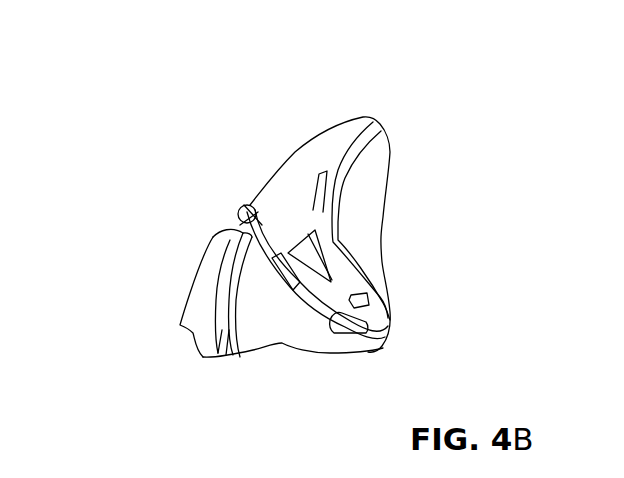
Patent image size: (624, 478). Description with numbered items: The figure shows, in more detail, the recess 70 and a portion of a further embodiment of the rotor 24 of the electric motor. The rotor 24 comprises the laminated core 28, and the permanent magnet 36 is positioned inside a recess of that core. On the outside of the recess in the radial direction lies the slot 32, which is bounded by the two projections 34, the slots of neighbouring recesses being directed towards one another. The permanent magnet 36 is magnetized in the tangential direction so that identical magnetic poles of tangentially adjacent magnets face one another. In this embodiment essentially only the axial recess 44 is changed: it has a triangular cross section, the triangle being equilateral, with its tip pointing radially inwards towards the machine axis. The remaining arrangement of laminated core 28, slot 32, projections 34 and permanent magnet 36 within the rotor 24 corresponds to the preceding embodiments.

The rotor 24 is at (467, 163).
The laminated core 28 is at (287, 183).
The recess 70 is at (262, 213).
The projections 34 is at (237, 209).
The slot 32 is at (235, 233).
The axial recess 44 is at (318, 245).
The permanent magnet 36 is at (275, 330).